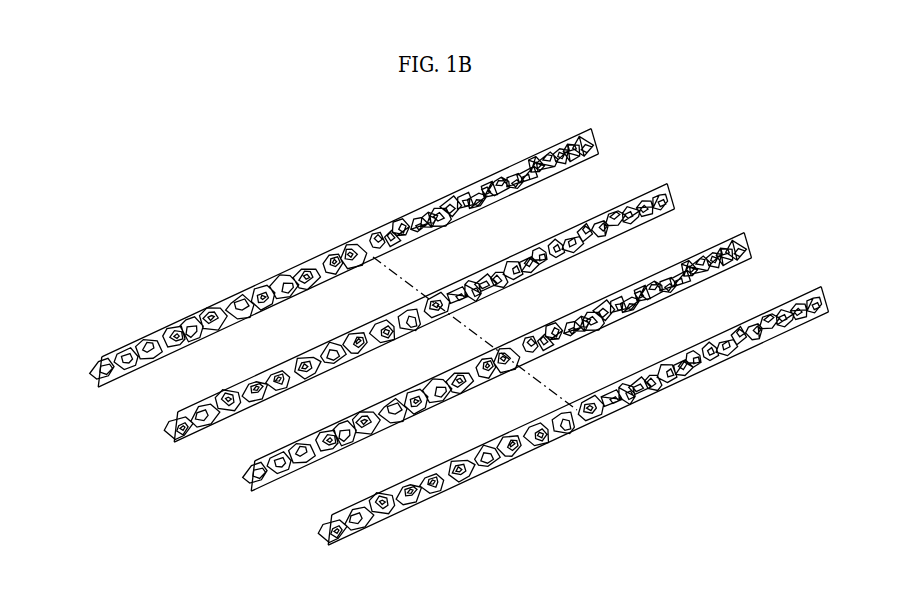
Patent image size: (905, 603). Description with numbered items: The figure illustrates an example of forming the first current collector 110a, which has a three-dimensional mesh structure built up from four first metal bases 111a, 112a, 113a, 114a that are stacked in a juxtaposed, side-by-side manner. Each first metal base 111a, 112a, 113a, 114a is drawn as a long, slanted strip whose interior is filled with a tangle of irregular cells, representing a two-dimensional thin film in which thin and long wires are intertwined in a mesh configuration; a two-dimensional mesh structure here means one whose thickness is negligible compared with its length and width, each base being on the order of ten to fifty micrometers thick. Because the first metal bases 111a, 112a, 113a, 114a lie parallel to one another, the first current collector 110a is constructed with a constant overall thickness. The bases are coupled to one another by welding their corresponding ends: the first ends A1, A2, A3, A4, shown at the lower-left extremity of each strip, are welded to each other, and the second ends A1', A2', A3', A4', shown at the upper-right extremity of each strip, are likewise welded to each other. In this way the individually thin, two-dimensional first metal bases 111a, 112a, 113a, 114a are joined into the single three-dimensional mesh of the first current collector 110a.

The first current collector 110a is at (113, 179).
The first metal base 111a is at (738, 328).
The first metal base 112a is at (660, 275).
The first metal base 113a is at (585, 220).
The first metal base 114a is at (510, 168).
The first end A1 is at (301, 540).
The first end A2 is at (224, 487).
The first end A3 is at (147, 436).
The first end A4 is at (71, 381).
The second end A1' is at (852, 279).
The second end A2' is at (775, 226).
The second end A3' is at (698, 175).
The second end A4' is at (624, 122).